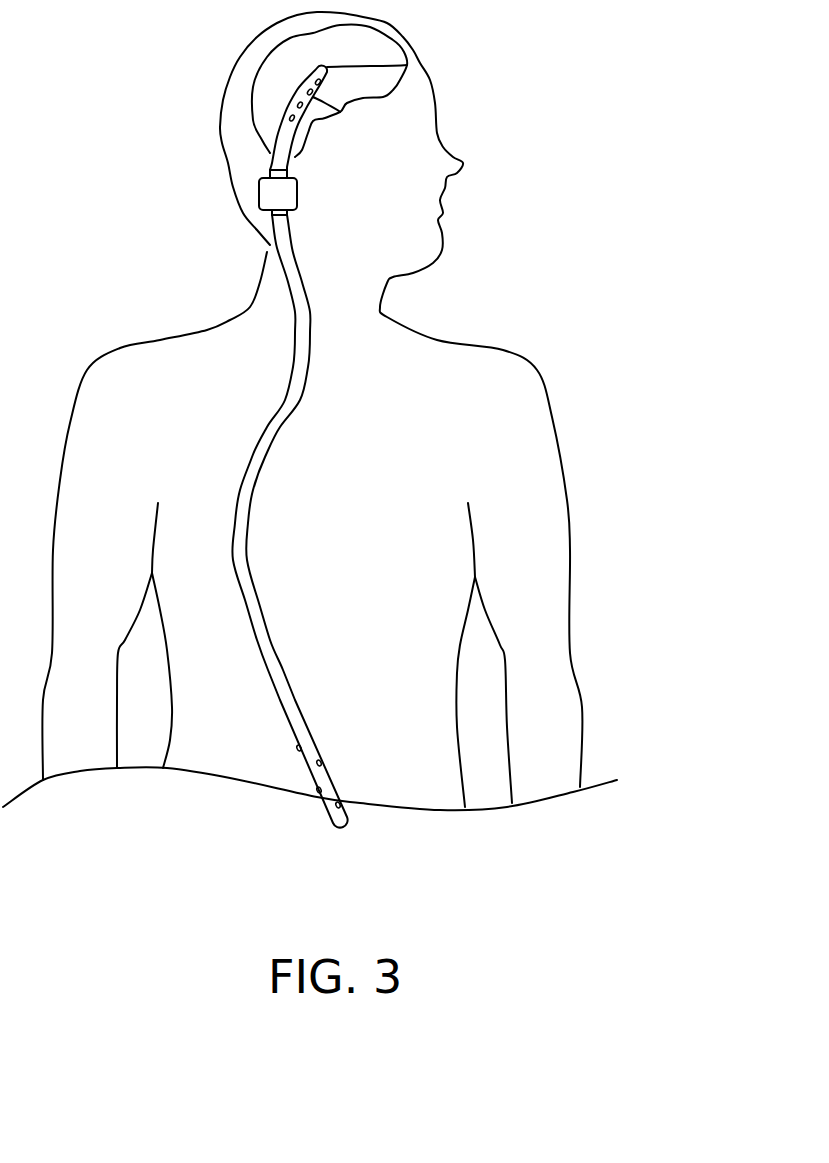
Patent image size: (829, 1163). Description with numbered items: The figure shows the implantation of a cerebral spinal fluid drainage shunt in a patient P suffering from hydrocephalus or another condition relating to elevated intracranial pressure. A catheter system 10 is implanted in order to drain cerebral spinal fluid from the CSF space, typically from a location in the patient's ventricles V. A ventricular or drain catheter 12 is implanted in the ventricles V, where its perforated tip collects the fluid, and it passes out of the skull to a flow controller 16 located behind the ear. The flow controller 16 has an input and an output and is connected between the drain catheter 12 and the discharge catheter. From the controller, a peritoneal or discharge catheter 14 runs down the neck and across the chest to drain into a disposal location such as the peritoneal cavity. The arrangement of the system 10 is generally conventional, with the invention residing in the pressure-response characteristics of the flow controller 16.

The catheter system 10 is at (281, 447).
The ventricular or drain catheter 12 is at (340, 112).
The peritoneal or discharge catheter 14 is at (233, 513).
The flow controller 16 is at (288, 195).
The ventricles V is at (407, 65).
The patient P is at (523, 422).